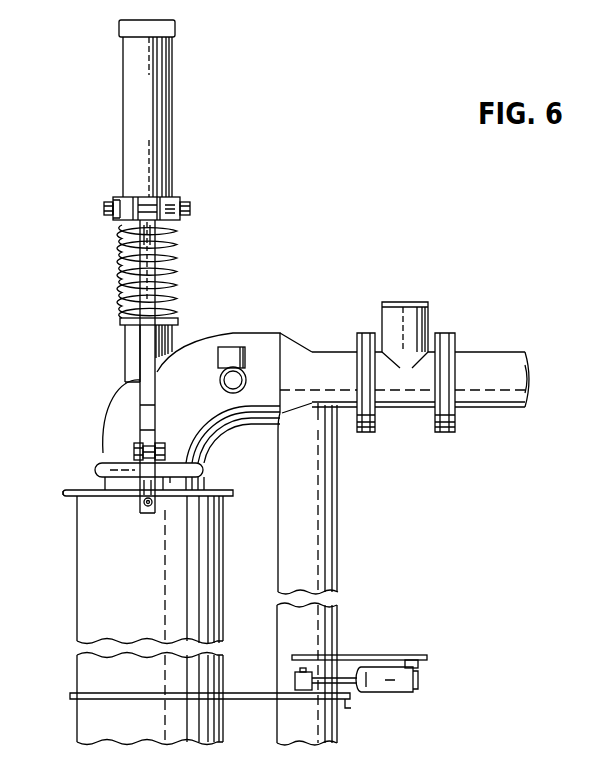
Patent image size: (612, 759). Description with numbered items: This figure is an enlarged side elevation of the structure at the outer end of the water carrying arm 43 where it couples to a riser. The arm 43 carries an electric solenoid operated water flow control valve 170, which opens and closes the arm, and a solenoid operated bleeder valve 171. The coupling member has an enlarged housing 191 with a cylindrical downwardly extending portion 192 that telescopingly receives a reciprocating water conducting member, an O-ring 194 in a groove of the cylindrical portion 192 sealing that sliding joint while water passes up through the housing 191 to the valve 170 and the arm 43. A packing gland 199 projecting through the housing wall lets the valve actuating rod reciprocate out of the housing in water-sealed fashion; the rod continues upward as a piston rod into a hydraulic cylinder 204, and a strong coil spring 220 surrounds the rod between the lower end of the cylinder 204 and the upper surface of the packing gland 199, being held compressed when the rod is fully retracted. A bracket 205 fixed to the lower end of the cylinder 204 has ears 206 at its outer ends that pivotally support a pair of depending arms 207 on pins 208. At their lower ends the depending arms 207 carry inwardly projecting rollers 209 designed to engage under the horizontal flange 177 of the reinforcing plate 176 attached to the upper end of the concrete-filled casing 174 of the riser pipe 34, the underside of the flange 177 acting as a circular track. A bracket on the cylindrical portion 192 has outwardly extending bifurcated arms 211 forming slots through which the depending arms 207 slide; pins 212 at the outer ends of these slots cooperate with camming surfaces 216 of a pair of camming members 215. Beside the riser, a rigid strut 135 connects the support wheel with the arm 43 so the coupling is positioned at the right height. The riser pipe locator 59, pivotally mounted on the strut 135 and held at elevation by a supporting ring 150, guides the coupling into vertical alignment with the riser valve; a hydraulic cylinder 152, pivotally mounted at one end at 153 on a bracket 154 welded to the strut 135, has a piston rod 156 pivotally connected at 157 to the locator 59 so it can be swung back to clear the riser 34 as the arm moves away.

The hydraulic cylinder 204 is at (170, 153).
The bracket 205 is at (177, 196).
The ears 206 is at (133, 207).
The depending arms 207 is at (147, 240).
The pins 208 is at (120, 195).
The coil spring 220 is at (178, 257).
The packing gland 199 is at (133, 343).
The housing 191 is at (192, 352).
The bleeder valve 171 is at (233, 347).
The water flow control valve 170 is at (420, 303).
The water carrying arm 43 is at (487, 368).
The pins 212 is at (148, 445).
The camming surfaces 216 is at (152, 420).
The bifurcated arms 211 is at (165, 453).
The O-ring 194 is at (203, 470).
The cylindrical downwardly extending portion 192 is at (203, 487).
The reinforcing plate 176 is at (80, 490).
The horizontal flange 177 is at (70, 497).
The camming members 215 is at (148, 480).
The rollers 209 is at (148, 512).
The casing 174 is at (77, 610).
The riser pipe 34 is at (223, 633).
The riser pipe locator 59 is at (88, 697).
The rigid strut 135 is at (338, 617).
The supporting ring 150 is at (338, 712).
The hydraulic cylinder 152 is at (396, 692).
The pivotal mounting 153 is at (418, 670).
The bracket 154 is at (398, 655).
The piston rod 156 is at (343, 678).
The pivotal connection 157 is at (296, 676).